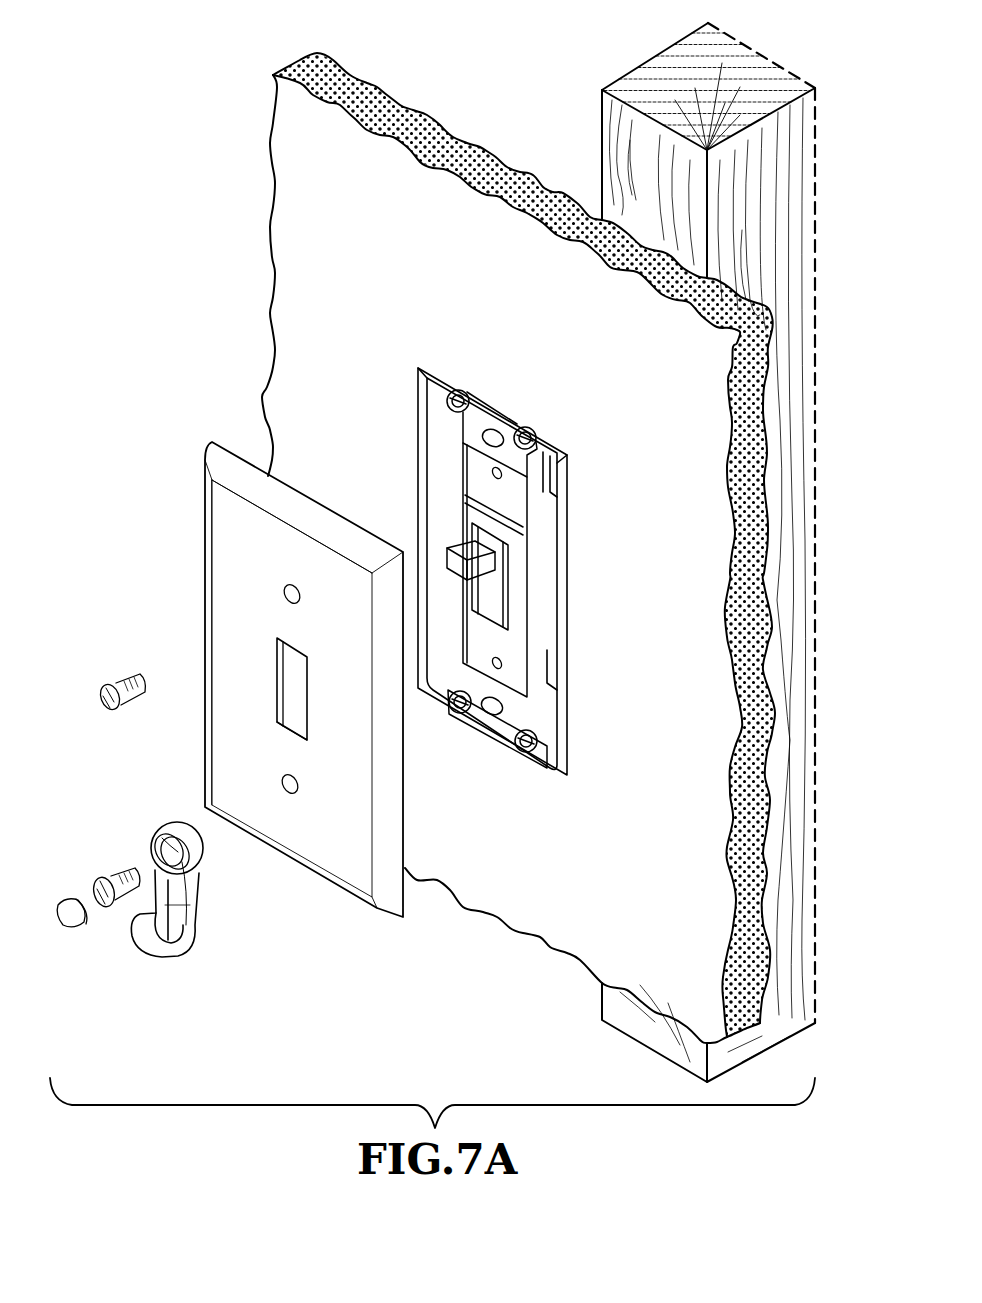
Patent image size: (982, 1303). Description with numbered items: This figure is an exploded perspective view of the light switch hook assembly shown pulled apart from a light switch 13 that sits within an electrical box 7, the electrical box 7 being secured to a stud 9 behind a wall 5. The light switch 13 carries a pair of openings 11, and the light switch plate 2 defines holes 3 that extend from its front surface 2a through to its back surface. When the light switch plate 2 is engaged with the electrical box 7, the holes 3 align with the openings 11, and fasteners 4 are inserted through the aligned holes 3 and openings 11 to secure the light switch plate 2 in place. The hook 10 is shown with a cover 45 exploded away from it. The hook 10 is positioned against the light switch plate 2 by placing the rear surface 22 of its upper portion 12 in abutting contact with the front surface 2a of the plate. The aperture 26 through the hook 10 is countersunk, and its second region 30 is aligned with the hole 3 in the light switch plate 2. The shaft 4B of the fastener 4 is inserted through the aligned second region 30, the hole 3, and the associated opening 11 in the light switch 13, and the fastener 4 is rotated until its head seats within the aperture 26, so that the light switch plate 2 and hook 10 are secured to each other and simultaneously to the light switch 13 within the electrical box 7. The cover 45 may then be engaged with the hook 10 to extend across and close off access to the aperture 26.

The stud 9 is at (652, 55).
The wall 5 is at (367, 298).
The electrical box 7 is at (418, 432).
The light switch 13 is at (530, 580).
The openings 11 is at (501, 477).
The light switch plate 2 is at (205, 601).
The front surface 2a is at (235, 555).
The hole 3 is at (285, 604).
The fastener 4 is at (119, 677).
The shaft 4B is at (114, 874).
The cover 45 is at (61, 899).
The hook 10 is at (198, 940).
The upper portion 12 is at (207, 852).
The second region 30 is at (190, 881).
The aperture 26 is at (153, 845).
The rear surface 22 is at (192, 842).